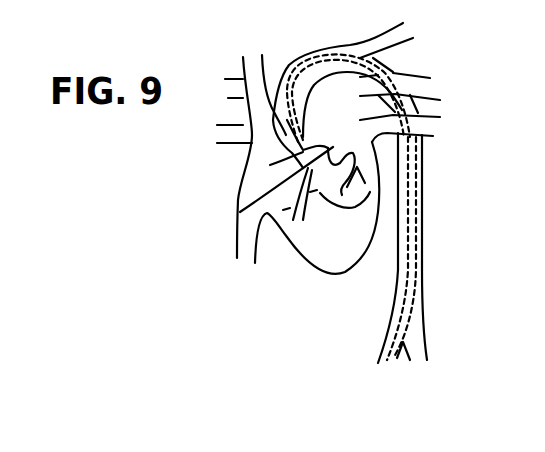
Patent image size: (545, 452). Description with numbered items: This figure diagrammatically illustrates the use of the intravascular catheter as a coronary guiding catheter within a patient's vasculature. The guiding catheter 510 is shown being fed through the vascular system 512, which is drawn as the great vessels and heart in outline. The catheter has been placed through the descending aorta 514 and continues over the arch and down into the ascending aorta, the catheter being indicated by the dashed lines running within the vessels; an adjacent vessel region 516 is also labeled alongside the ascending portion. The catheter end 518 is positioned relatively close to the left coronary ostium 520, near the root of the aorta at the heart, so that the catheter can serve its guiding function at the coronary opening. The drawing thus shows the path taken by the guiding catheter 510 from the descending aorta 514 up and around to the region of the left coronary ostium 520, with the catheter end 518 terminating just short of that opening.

The guiding catheter 510 is at (420, 263).
The vascular system 512 is at (423, 225).
The descending aorta 514 is at (397, 63).
The ascending aorta 516 is at (273, 78).
The catheter end 518 is at (250, 163).
The left coronary ostium 520 is at (240, 208).